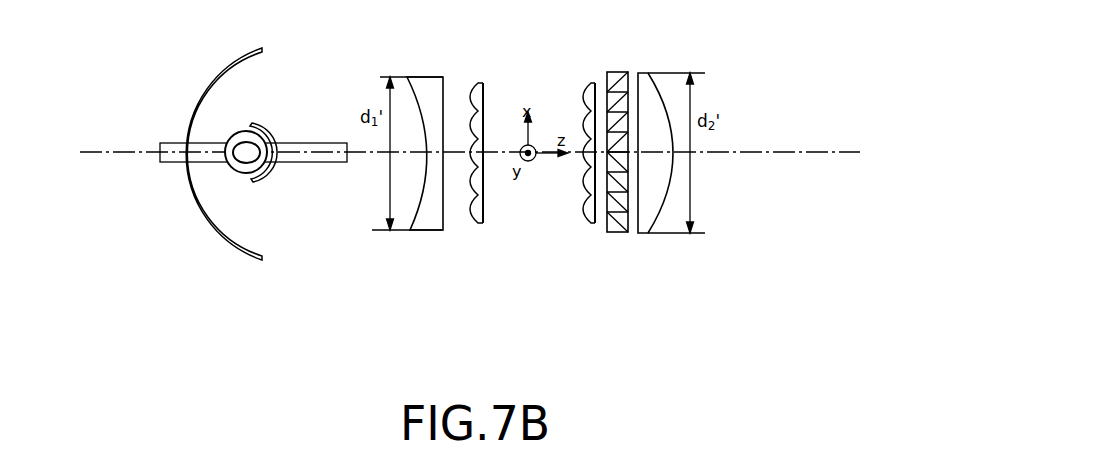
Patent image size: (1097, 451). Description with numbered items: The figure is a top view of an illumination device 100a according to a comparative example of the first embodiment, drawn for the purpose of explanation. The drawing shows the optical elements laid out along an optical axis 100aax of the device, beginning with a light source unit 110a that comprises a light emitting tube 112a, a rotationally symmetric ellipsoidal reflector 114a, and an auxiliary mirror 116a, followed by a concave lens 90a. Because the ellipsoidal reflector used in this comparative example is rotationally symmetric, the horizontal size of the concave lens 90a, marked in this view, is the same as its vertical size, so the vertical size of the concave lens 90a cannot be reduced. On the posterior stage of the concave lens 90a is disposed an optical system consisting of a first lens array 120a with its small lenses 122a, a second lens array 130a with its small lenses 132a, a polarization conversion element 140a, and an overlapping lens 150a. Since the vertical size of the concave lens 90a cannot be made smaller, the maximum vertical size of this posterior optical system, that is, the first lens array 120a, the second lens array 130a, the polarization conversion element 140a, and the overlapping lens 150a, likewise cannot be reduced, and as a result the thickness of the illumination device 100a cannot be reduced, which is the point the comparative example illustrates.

The illumination device 100a is at (768, 38).
The optical axis 100aax is at (138, 152).
The light source unit 110a is at (253, 193).
The light emitting tube 112a is at (243, 174).
The reflector 114a is at (211, 222).
The auxiliary mirror 116a is at (295, 212).
The concave lens 90a is at (425, 230).
The first lens array 120a is at (465, 184).
The small lenses of first lens array 122a is at (470, 90).
The second lens array 130a is at (564, 184).
The small lenses of second lens array 132a is at (583, 90).
The polarization conversion element 140a is at (617, 233).
The overlapping lens 150a is at (643, 233).